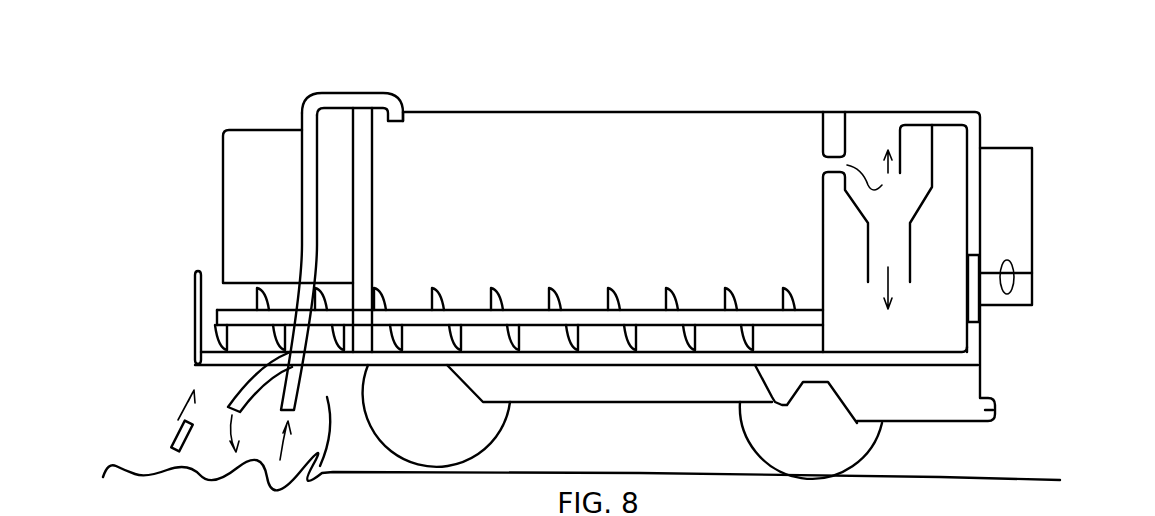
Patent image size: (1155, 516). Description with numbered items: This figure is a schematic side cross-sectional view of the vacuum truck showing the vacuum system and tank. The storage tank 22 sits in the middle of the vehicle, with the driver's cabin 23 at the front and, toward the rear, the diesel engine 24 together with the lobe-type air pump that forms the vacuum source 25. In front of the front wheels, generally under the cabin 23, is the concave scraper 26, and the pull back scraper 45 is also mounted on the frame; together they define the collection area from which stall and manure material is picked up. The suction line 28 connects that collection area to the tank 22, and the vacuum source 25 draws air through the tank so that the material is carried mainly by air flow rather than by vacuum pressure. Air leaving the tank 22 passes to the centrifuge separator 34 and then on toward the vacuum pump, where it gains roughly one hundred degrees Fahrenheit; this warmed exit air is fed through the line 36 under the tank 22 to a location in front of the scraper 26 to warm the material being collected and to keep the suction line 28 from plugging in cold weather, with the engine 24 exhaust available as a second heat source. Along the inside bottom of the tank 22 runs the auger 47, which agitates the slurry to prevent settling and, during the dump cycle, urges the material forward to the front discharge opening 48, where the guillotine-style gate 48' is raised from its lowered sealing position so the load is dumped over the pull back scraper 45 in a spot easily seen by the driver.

The storage tank 22 is at (681, 110).
The driver's cabin 23 is at (260, 128).
The engine 24 is at (1033, 198).
The vacuum source 25 is at (990, 282).
The scraper 26 is at (333, 450).
The suction line 28 is at (373, 93).
The centrifuge separator 34 is at (917, 210).
The line 36 is at (680, 360).
The pull back scraper 45 is at (175, 437).
The auger 47 is at (668, 288).
The front discharge opening 48 is at (484, 317).
The guillotine-style gate 48' is at (176, 298).